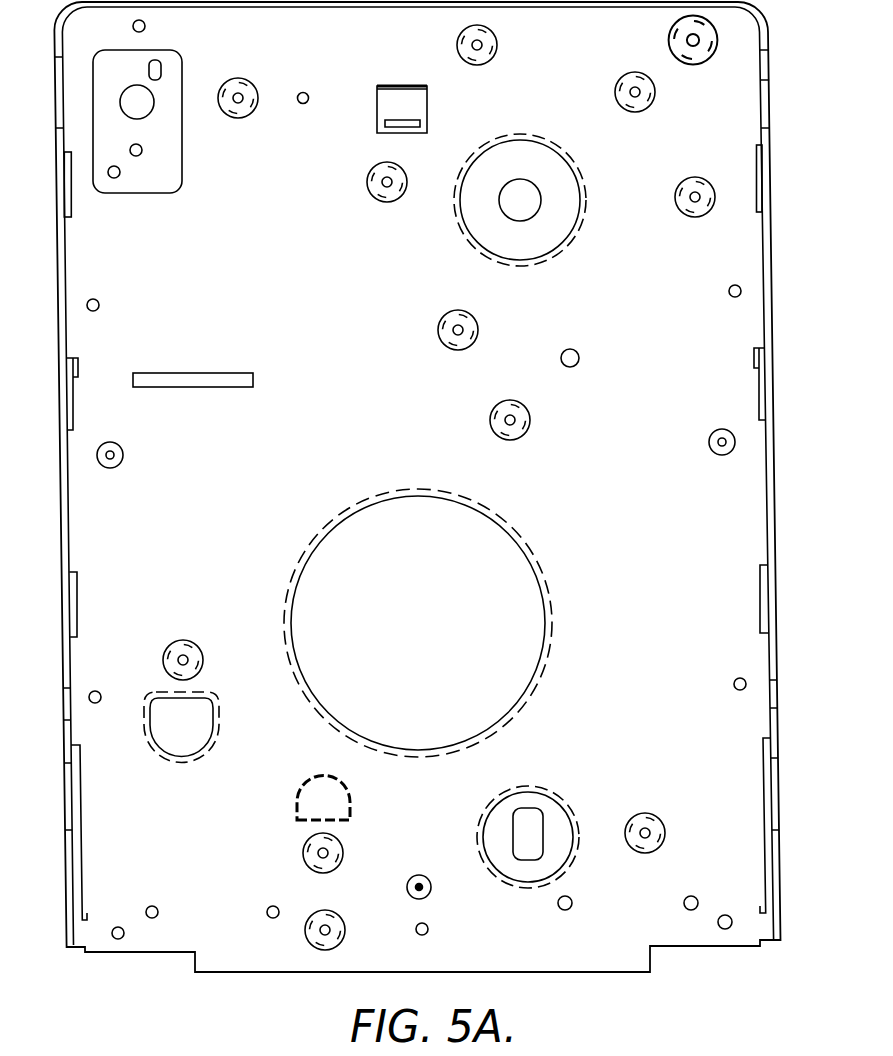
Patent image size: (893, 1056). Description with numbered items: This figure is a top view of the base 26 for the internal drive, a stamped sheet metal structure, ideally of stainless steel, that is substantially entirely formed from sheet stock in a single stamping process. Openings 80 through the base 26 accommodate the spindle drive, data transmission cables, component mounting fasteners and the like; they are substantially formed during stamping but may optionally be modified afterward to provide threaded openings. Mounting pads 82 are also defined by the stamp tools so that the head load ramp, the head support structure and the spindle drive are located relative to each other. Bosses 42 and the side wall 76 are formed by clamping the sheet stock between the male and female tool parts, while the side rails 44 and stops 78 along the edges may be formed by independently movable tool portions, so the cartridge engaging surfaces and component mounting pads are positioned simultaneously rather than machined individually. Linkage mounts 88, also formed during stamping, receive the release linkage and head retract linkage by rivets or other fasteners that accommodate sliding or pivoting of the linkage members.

The base 26 is at (748, 75).
The bosses 42 is at (124, 455).
The side rails 44 is at (81, 830).
The side wall 76 is at (75, 652).
The stops 78 is at (79, 368).
The openings 80 is at (150, 108).
The mounting pads 82 is at (152, 183).
The linkage mounts 88 is at (378, 184).